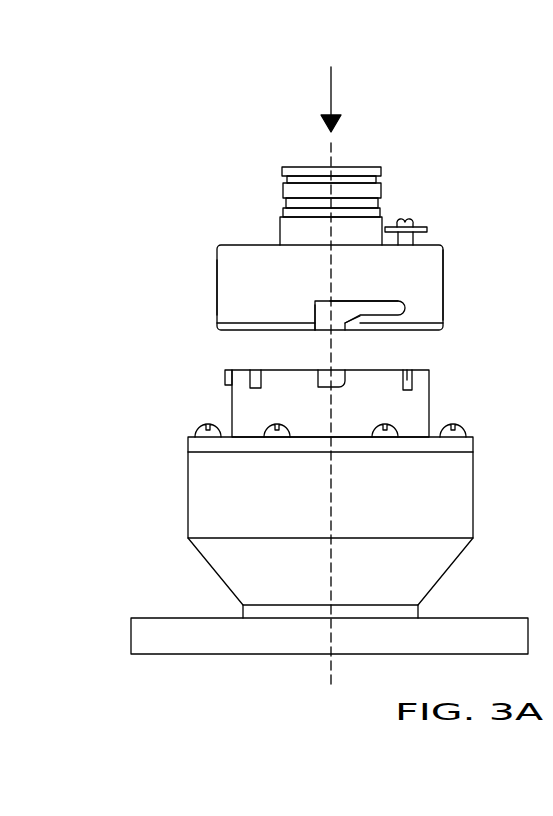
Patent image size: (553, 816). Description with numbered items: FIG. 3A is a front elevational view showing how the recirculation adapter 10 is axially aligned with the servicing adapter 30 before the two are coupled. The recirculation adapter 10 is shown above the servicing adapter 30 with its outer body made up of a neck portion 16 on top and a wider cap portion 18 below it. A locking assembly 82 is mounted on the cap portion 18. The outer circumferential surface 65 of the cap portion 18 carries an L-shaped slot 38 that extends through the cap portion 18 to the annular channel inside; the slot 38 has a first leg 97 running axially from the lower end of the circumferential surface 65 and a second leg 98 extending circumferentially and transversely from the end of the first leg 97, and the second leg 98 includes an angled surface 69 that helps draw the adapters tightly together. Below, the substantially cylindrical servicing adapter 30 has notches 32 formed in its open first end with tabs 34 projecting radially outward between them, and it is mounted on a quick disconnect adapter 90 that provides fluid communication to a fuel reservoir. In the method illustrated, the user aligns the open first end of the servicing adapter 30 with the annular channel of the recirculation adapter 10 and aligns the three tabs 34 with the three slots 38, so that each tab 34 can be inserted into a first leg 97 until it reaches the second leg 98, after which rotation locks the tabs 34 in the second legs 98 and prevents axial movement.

The recirculation adapter 10 is at (183, 263).
The neck portion 16 is at (292, 227).
The cap portion 18 is at (222, 308).
The servicing adapter 30 is at (185, 400).
The notches 32 is at (410, 381).
The tabs 34 is at (224, 377).
The slots 38 is at (313, 301).
The circumferential surface 65 is at (445, 255).
The angled surface 69 is at (367, 323).
The locking assembly 82 is at (417, 220).
The quick disconnect adapter 90 is at (172, 507).
The first leg 97 is at (316, 320).
The second leg 98 is at (387, 301).